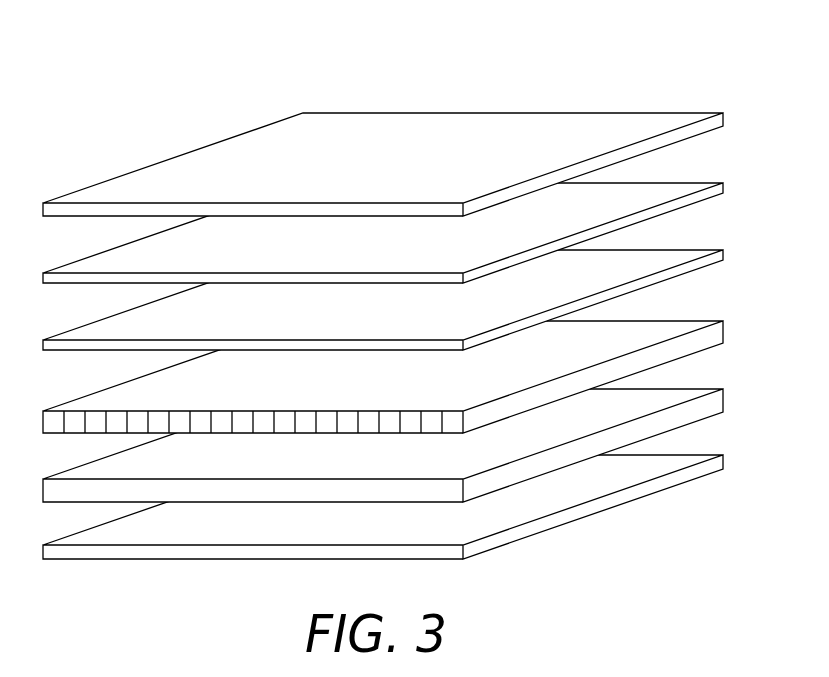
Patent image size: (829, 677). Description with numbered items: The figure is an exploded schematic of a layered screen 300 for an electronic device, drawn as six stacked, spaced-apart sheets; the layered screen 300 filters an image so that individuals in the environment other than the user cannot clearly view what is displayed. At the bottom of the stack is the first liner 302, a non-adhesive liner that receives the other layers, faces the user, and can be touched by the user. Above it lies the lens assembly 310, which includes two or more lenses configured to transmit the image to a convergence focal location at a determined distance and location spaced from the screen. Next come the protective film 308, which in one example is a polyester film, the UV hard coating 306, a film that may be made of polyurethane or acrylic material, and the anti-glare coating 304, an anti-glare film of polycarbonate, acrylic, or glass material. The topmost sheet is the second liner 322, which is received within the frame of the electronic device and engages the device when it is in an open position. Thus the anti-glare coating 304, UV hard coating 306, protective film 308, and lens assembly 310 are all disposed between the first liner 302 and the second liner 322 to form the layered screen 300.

The layered screen 300 is at (415, 286).
The first liner 302 is at (726, 462).
The anti-glare coating 304 is at (726, 188).
The ultra-violet (UV) hard coating 306 is at (726, 255).
The protective film 308 is at (726, 332).
The lens assembly 310 is at (726, 400).
The second liner 322 is at (726, 119).